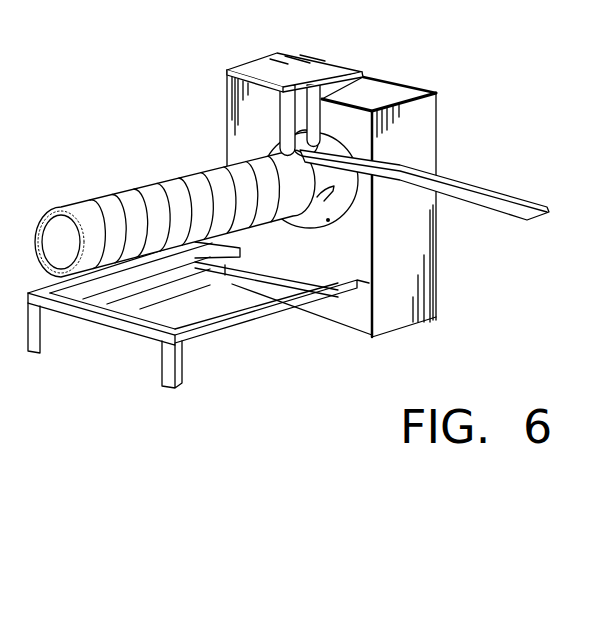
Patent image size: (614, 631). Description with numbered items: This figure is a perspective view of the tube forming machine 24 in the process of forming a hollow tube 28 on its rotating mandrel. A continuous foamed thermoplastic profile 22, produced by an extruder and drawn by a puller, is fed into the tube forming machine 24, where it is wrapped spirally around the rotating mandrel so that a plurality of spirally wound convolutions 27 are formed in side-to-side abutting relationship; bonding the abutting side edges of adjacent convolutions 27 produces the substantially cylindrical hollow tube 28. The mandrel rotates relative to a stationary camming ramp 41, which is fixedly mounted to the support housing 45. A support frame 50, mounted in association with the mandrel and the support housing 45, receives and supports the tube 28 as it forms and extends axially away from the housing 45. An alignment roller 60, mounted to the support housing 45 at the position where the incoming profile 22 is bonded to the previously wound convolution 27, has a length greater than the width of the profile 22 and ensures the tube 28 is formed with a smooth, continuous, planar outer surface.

The foamed thermoplastic profile 22 is at (507, 195).
The tube forming machine 24 is at (437, 143).
The spirally wound convolutions 27 is at (208, 233).
The hollow tube 28 is at (112, 184).
The camming ramp 41 is at (352, 200).
The support housing 45 is at (397, 298).
The support frame 50 is at (236, 337).
The alignment roller 60 is at (308, 135).